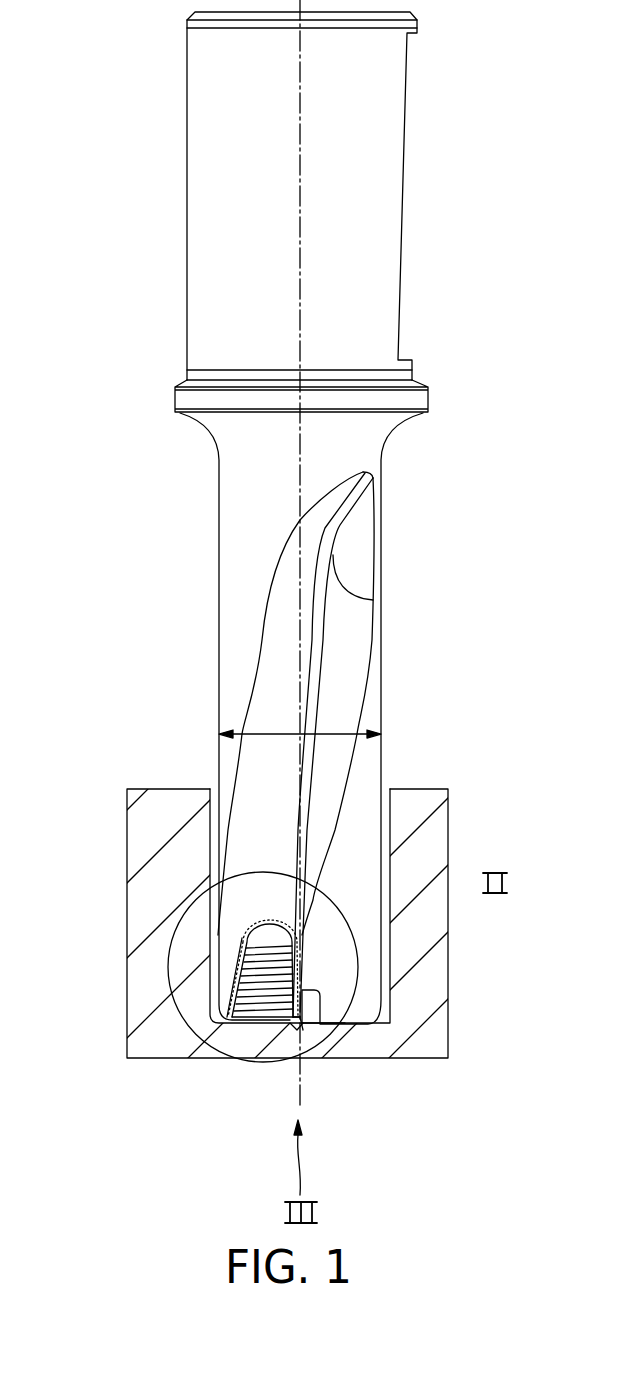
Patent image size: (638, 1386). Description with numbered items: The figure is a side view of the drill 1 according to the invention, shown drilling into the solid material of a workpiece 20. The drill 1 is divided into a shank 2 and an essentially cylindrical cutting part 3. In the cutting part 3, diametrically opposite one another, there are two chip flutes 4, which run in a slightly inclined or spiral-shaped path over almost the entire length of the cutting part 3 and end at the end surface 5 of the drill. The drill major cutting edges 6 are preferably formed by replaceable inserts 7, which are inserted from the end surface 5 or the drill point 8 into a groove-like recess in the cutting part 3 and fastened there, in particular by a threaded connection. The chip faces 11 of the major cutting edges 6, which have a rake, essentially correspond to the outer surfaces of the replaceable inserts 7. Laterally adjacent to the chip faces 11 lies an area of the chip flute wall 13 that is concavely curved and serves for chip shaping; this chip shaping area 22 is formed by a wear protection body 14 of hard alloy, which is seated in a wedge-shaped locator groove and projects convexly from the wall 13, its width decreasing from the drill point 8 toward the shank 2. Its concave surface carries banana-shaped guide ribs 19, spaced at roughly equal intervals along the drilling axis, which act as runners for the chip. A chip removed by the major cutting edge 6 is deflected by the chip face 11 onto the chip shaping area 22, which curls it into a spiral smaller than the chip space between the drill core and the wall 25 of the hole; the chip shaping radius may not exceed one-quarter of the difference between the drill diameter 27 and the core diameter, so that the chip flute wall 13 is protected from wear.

The drill 1 is at (449, 375).
The shank 2 is at (208, 256).
The cutting part 3 is at (219, 537).
The chip flute 4 is at (348, 670).
The end surface 5 is at (347, 1027).
The major cutting edge 6 is at (304, 1032).
The replaceable insert 7 is at (320, 1000).
The drill point 8 is at (293, 1032).
The chip face 11 is at (280, 1018).
The chip flute wall 13 is at (263, 667).
The wear protection body 14 is at (303, 977).
The guide rib 19 is at (250, 993).
The workpiece 20 is at (143, 837).
The chip shaping area 22 is at (247, 947).
The wall of the hole 25 is at (390, 810).
The drill diameter 27 is at (268, 733).